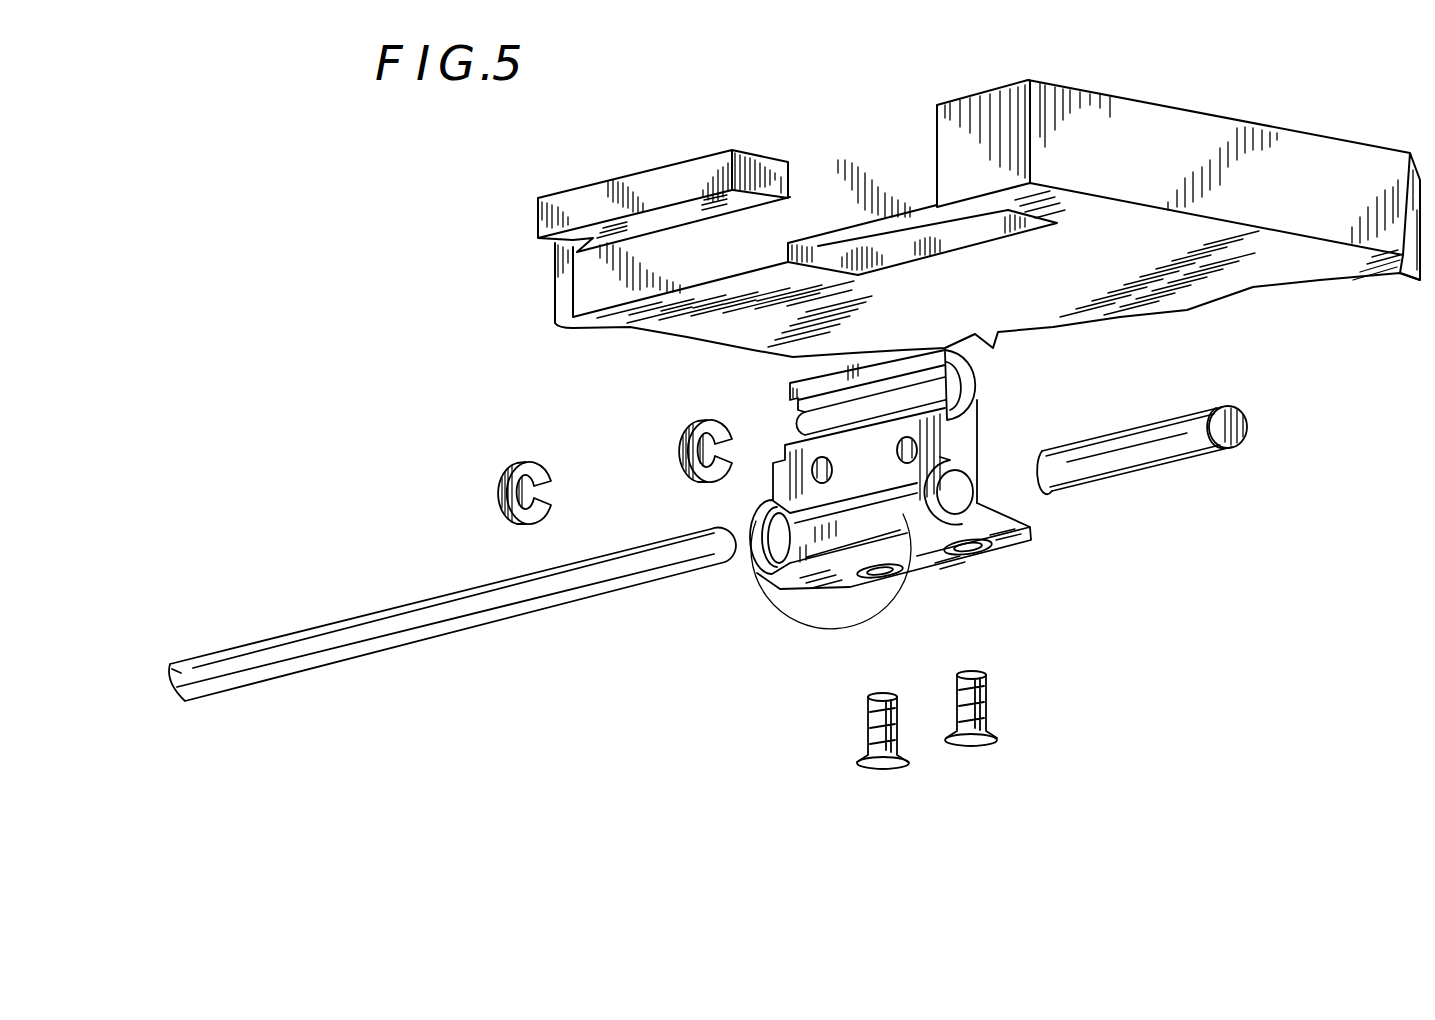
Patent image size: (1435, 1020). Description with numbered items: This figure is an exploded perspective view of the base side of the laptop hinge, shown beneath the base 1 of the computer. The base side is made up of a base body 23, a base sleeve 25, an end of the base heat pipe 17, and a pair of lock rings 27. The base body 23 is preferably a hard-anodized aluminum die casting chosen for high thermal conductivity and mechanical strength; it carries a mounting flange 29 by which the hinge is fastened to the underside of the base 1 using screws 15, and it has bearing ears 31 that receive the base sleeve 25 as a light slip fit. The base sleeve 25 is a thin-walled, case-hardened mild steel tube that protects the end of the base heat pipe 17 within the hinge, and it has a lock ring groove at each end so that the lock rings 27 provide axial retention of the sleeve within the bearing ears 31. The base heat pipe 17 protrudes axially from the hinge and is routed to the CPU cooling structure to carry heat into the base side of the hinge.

The base 1 is at (1120, 127).
The screws 15 is at (903, 763).
The base heat pipe 17 is at (443, 617).
The base body 23 is at (922, 495).
The base sleeve 25 is at (1186, 448).
The lock rings 27 is at (678, 443).
The mounting flange 29 is at (923, 560).
The bearing ears 31 is at (814, 627).